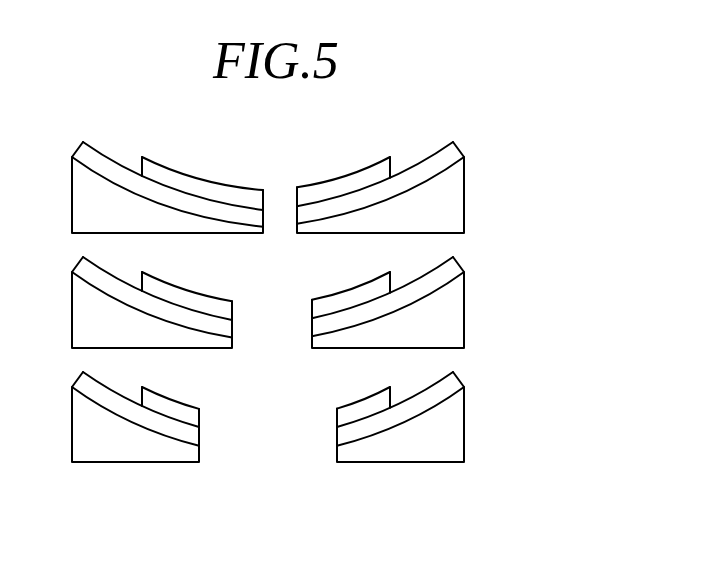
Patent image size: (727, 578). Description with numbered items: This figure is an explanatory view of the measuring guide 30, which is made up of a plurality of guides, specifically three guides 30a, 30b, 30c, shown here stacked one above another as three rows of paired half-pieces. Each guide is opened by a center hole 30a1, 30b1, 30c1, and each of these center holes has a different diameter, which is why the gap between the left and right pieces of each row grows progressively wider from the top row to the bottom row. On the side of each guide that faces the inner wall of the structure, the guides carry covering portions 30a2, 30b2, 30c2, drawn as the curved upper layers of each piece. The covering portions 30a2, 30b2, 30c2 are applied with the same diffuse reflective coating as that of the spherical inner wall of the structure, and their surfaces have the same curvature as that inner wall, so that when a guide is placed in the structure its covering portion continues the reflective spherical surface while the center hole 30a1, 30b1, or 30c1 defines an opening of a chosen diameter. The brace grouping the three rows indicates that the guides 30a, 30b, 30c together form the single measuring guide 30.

The measuring guide 30 is at (333, 322).
The guide 30a is at (303, 208).
The center hole 30a1 is at (280, 218).
The covering portion 30a2 is at (172, 169).
The guide 30b is at (304, 322).
The center hole 30b1 is at (280, 332).
The covering portion 30b2 is at (172, 284).
The guide 30c is at (303, 437).
The center hole 30c1 is at (280, 448).
The covering portion 30c2 is at (172, 399).